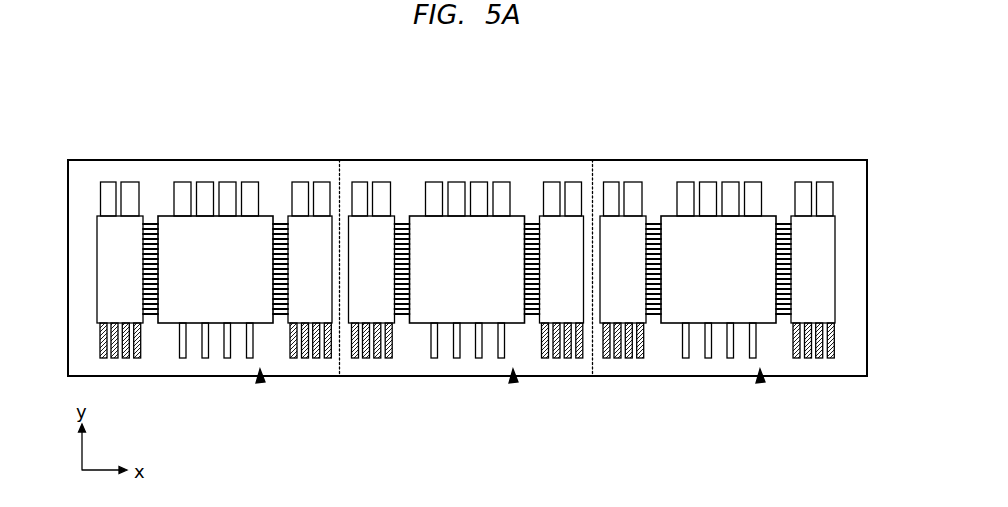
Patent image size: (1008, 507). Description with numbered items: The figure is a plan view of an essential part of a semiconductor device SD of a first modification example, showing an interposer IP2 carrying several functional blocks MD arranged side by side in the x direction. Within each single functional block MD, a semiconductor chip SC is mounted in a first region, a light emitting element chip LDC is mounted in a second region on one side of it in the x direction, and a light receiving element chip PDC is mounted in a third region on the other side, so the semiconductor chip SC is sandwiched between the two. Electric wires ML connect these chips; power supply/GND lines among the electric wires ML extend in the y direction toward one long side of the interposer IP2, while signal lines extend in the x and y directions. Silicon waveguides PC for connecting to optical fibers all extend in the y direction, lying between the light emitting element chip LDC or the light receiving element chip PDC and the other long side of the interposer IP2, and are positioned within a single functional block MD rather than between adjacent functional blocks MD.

The electric wire ML is at (183, 186).
The light receiving element chip PDC is at (371, 258).
The semiconductor chip SC is at (467, 258).
The light emitting element chip LDC is at (561, 258).
The semiconductor device SD is at (473, 247).
The interposer IP2 is at (840, 161).
The functional block MD is at (261, 383).
The silicon waveguide PC is at (466, 262).